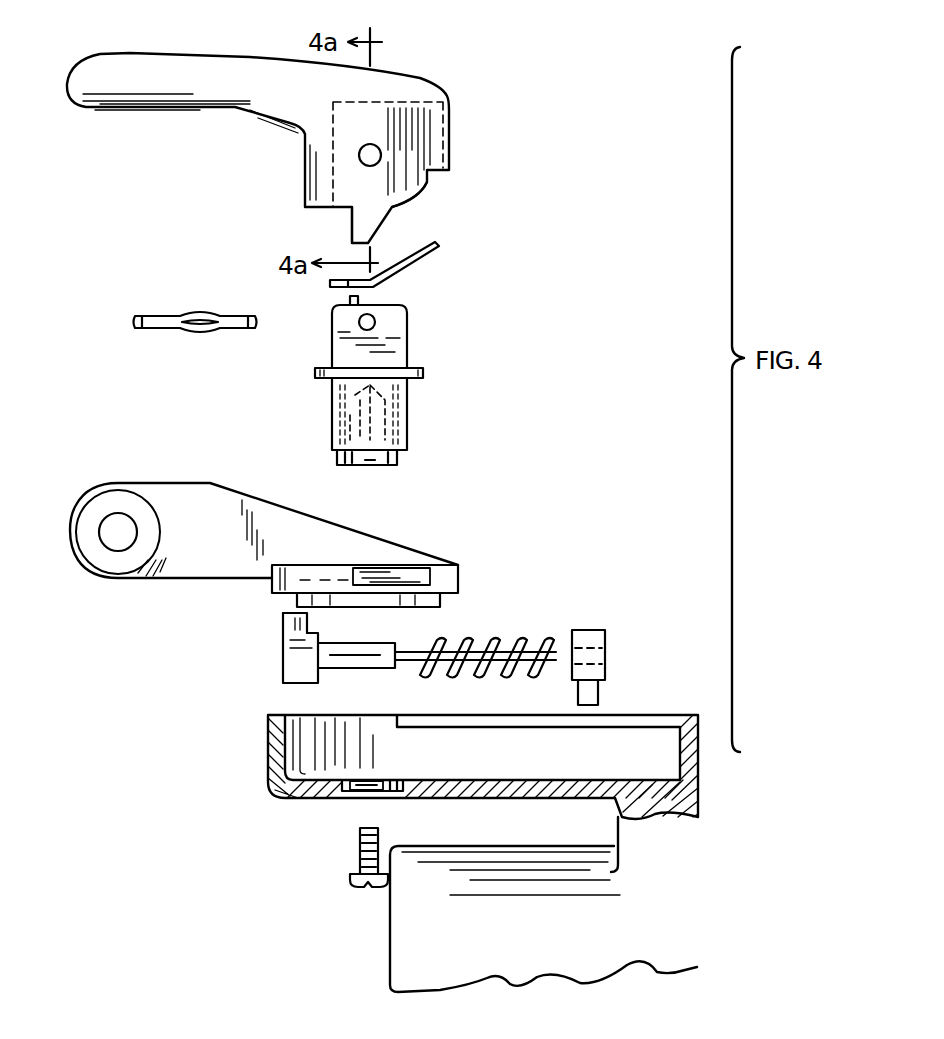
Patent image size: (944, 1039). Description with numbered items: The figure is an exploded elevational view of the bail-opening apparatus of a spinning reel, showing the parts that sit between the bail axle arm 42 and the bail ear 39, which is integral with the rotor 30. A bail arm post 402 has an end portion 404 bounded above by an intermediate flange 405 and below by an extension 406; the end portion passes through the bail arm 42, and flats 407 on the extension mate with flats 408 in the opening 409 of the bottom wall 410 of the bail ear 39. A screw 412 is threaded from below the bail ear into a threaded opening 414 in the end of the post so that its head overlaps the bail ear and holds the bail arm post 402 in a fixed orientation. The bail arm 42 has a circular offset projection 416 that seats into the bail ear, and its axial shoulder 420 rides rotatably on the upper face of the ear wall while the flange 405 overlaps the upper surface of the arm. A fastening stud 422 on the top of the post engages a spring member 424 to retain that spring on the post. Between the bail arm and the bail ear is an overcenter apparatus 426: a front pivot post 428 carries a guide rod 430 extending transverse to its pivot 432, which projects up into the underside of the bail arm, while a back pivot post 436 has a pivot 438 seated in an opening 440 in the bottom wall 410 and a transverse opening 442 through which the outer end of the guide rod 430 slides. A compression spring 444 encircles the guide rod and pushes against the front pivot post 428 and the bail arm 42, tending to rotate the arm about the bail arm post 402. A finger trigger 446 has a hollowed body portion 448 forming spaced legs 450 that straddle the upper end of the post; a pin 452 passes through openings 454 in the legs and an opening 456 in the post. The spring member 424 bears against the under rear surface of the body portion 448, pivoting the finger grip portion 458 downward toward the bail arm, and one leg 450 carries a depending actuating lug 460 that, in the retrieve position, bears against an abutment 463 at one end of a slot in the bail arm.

The rotor 30 is at (680, 906).
The bail ear 39 is at (268, 760).
The bail axle arm 42 is at (175, 484).
The bail arm post 402 is at (405, 349).
The end portion 404 is at (332, 394).
The intermediate flange 405 is at (425, 373).
The extension 406 is at (400, 456).
The flats 407 is at (370, 468).
The flats 408 is at (360, 792).
The opening 409 is at (312, 792).
The bottom wall 410 is at (313, 773).
The screw 412 is at (358, 854).
The threaded opening 414 is at (385, 440).
The circular offset projection 416 is at (440, 598).
The axial shoulder 420 is at (290, 591).
The fastening stud 422 is at (350, 300).
The spring member 424 is at (420, 256).
The overcenter apparatus 426 is at (504, 631).
The front pivot post 428 is at (283, 670).
The guide rod 430 is at (358, 648).
The pivot 432 is at (285, 625).
The back pivot post 436 is at (605, 641).
The pivot 438 is at (598, 694).
The opening 440 is at (588, 780).
The transverse opening 442 is at (605, 659).
The compression spring 444 is at (440, 652).
The finger trigger 446 is at (210, 56).
The hollowed body portion 448 is at (449, 152).
The spaced legs 450 is at (407, 198).
The pin 452 is at (150, 328).
The openings 454 is at (383, 155).
The opening 456 is at (375, 322).
The finger grip portion 458 is at (108, 97).
The actuating lug 460 is at (352, 225).
The abutment 463 is at (373, 570).